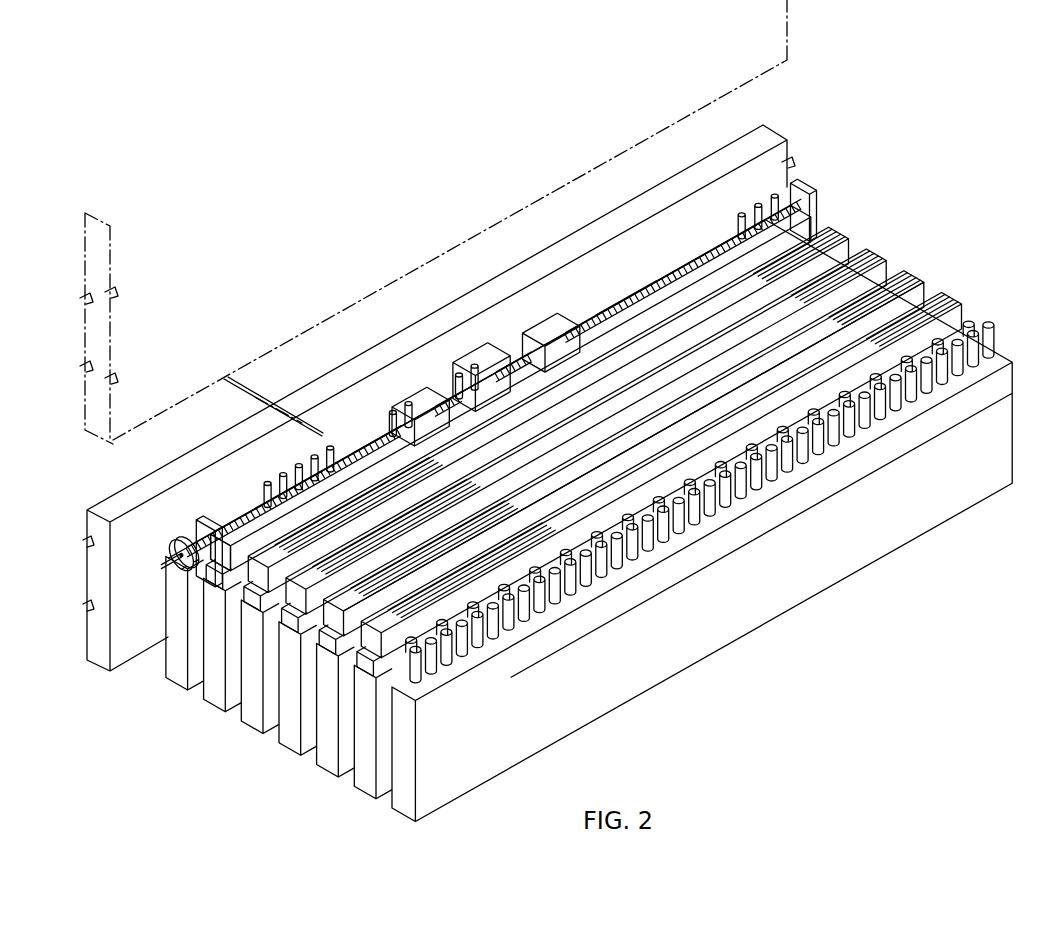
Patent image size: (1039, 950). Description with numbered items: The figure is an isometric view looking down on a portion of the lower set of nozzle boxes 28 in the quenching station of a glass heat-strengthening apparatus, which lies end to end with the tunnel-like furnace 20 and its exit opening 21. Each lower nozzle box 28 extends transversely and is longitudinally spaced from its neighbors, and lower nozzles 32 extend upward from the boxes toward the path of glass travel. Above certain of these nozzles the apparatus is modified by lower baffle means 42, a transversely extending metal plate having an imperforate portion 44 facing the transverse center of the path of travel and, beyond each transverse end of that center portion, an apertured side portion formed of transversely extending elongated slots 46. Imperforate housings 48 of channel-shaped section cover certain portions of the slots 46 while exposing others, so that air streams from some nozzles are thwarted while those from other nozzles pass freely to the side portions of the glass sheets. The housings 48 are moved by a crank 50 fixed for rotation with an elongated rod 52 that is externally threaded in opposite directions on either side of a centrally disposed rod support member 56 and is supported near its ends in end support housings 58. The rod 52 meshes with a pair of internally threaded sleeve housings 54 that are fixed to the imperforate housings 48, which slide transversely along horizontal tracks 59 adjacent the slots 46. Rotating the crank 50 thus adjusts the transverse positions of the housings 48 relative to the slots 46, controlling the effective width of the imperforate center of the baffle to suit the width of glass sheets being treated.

The tunnel-like furnace 20 is at (112, 446).
The exit opening 21 is at (738, 114).
The lower nozzle boxes 28 is at (403, 705).
The lower nozzles 32 is at (962, 355).
The lower baffle means 42 is at (881, 243).
The imperforate portion 44 is at (640, 432).
The elongated slots 46 is at (278, 495).
The imperforate housings 48 is at (388, 440).
The crank 50 is at (176, 540).
The elongated rod 52 is at (358, 435).
The internally threaded sleeve housings 54 is at (425, 402).
The rod support member 56 is at (497, 358).
The end support housings 58 is at (209, 530).
The tracks 59 is at (246, 548).